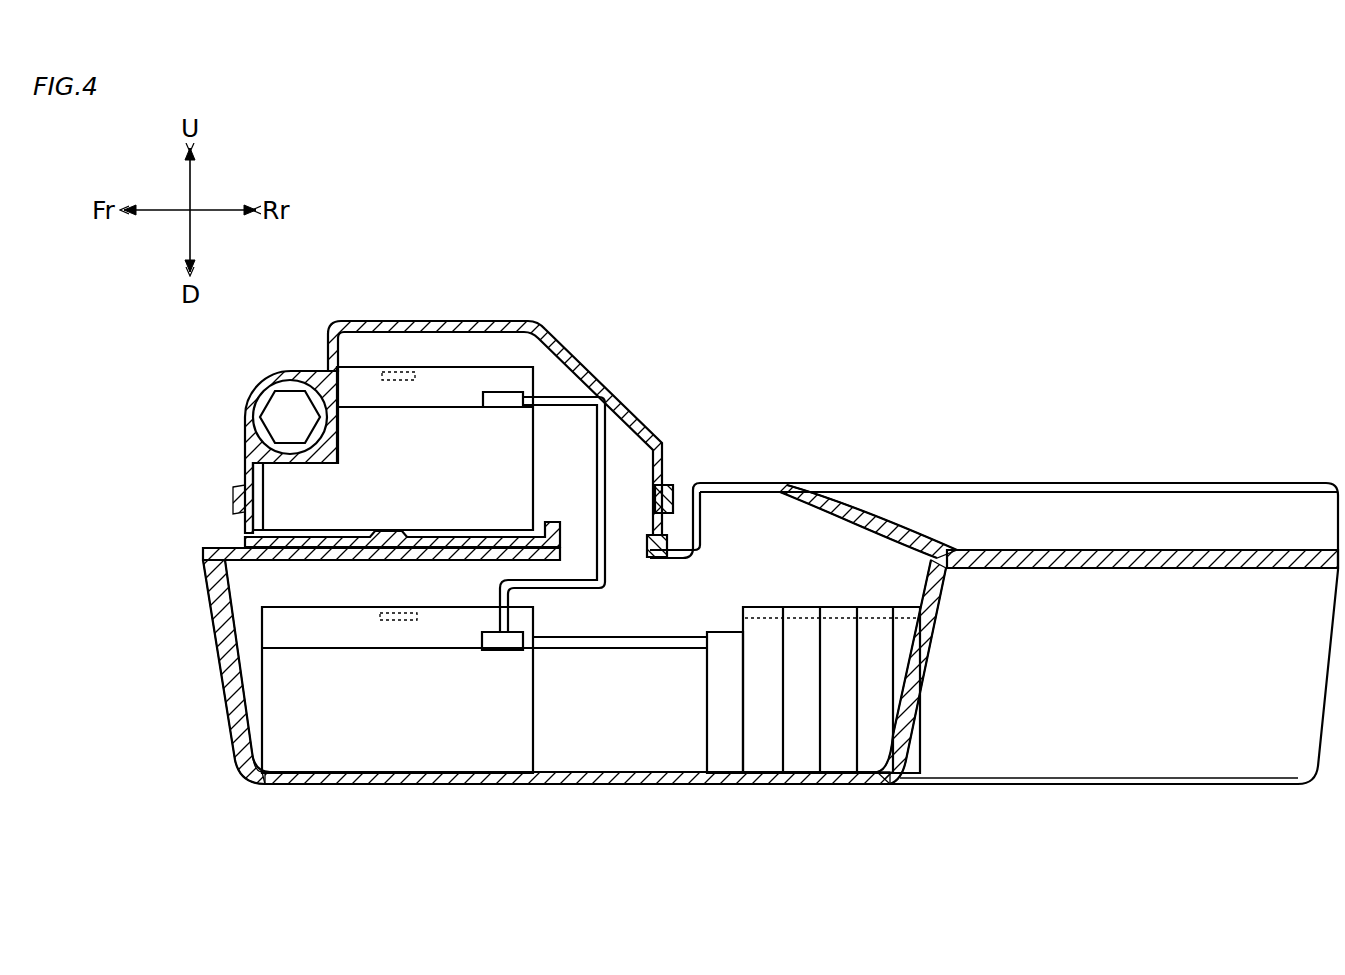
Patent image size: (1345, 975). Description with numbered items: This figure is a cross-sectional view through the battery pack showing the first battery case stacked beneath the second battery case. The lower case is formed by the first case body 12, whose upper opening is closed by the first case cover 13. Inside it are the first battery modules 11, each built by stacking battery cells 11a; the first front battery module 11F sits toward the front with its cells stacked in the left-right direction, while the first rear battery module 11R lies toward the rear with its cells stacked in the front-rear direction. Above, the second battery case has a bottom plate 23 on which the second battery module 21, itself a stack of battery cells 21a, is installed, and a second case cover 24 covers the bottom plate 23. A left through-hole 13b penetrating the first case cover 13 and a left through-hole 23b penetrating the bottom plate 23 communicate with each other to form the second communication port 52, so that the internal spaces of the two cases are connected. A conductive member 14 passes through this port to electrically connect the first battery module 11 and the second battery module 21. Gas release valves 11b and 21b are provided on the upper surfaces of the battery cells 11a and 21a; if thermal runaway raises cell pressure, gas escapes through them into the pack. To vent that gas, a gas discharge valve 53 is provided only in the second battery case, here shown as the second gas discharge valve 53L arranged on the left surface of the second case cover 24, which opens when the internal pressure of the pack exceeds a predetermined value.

The first battery module 11 is at (597, 702).
The first front battery module 11F is at (422, 778).
The first rear battery module 11R is at (833, 778).
The battery cell 11a is at (338, 622).
The gas release valve 11b is at (405, 605).
The first case body 12 is at (1138, 722).
The first case cover 13 is at (993, 485).
The left through-hole 13b is at (648, 565).
The conductive member 14 is at (606, 455).
The second battery module 21 is at (393, 392).
The battery cell 21a is at (360, 383).
The gas release valve 21b is at (400, 372).
The bottom plate 23 is at (242, 516).
The left through-hole 23b is at (650, 540).
The second case cover 24 is at (512, 321).
The second communication port 52 is at (754, 467).
The gas discharge valve 53 is at (265, 418).
The second gas discharge valve 53L is at (235, 452).